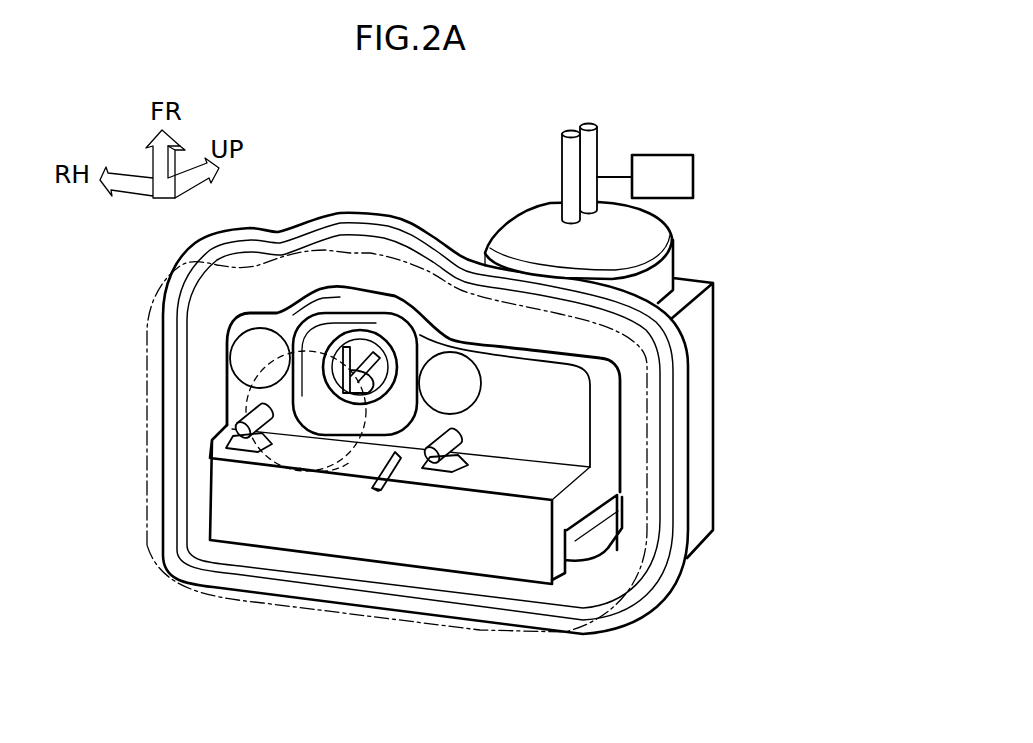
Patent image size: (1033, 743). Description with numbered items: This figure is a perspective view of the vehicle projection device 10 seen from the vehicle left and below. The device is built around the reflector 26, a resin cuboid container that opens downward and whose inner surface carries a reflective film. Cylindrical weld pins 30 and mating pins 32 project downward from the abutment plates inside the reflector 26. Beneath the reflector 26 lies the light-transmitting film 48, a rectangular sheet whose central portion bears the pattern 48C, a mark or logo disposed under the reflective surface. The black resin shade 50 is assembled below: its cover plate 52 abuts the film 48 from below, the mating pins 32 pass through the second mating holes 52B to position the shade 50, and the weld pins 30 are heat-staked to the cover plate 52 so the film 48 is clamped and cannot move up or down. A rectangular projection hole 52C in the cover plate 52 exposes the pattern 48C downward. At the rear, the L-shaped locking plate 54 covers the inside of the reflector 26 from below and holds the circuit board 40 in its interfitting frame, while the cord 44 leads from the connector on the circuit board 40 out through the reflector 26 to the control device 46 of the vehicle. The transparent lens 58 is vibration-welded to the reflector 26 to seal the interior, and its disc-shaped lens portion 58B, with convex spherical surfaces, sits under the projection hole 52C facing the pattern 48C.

The vehicle projection device 10 is at (366, 161).
The reflector 26 is at (322, 216).
The weld pins 30 is at (245, 348).
The mating pins 32 is at (236, 418).
The circuit board 40 is at (575, 560).
The cord 44 is at (560, 158).
The control device 46 is at (694, 172).
The film 48 is at (318, 320).
The pattern 48C is at (397, 365).
The shade 50 is at (546, 358).
The cover plate 52 is at (565, 390).
The second mating holes 52B is at (265, 448).
The projection hole 52C is at (333, 423).
The locking plate 54 is at (400, 566).
The lens 58 is at (147, 333).
The lens portion 58B is at (345, 476).